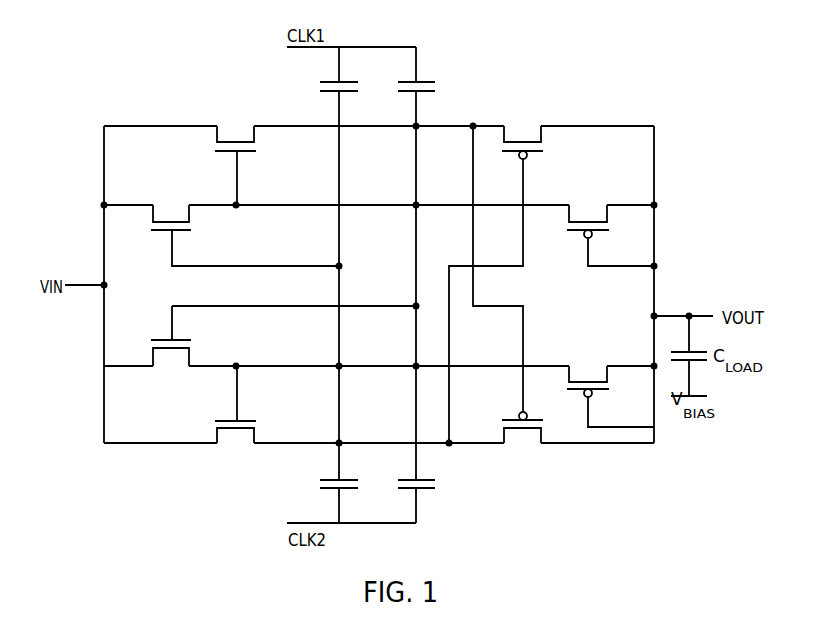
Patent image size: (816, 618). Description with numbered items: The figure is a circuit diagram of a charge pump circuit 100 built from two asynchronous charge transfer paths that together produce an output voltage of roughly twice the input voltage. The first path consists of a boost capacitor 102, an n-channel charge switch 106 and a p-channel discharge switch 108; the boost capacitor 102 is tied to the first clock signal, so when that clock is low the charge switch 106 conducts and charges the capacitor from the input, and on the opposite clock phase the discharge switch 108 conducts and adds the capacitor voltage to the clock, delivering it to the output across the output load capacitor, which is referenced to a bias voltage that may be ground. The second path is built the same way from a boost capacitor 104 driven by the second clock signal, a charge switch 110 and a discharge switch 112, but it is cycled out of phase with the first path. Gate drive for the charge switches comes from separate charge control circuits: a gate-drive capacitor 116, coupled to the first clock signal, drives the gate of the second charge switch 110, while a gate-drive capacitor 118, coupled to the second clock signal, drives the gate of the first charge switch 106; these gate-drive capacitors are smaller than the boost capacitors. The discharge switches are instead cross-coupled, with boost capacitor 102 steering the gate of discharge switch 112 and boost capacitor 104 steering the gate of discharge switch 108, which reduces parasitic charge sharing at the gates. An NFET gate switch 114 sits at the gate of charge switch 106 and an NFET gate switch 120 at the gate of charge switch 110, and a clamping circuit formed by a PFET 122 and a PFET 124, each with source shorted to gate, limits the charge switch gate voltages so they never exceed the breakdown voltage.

The charge pump circuit 100 is at (638, 56).
The boost capacitor 102 is at (428, 81).
The boost capacitor 104 is at (350, 479).
The charge switch 106 is at (247, 151).
The discharge switch 108 is at (534, 155).
The charge switch 110 is at (248, 421).
The discharge switch 112 is at (516, 416).
The gate switch 114 is at (180, 230).
The gate-drive capacitor 116 is at (350, 81).
The gate-drive capacitor 118 is at (428, 479).
The gate switch 120 is at (180, 340).
The PFET 122 is at (596, 236).
The PFET 124 is at (597, 396).